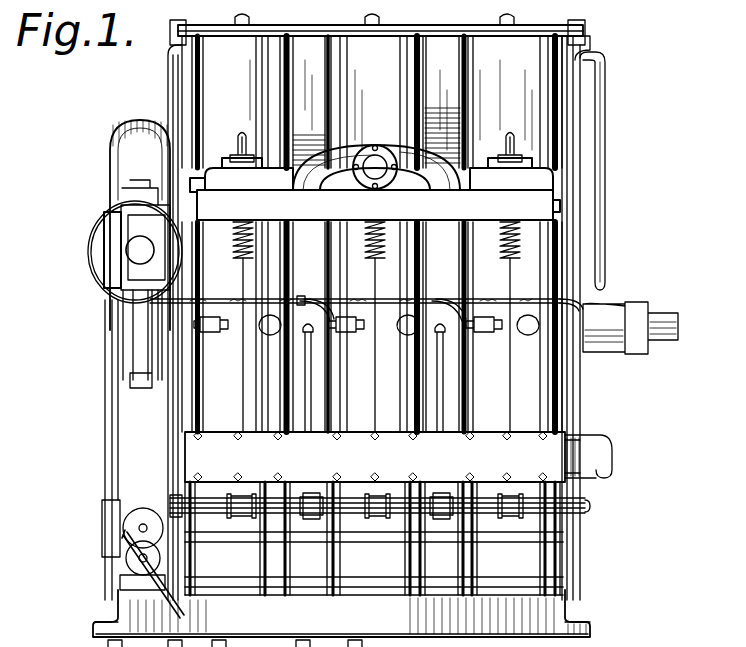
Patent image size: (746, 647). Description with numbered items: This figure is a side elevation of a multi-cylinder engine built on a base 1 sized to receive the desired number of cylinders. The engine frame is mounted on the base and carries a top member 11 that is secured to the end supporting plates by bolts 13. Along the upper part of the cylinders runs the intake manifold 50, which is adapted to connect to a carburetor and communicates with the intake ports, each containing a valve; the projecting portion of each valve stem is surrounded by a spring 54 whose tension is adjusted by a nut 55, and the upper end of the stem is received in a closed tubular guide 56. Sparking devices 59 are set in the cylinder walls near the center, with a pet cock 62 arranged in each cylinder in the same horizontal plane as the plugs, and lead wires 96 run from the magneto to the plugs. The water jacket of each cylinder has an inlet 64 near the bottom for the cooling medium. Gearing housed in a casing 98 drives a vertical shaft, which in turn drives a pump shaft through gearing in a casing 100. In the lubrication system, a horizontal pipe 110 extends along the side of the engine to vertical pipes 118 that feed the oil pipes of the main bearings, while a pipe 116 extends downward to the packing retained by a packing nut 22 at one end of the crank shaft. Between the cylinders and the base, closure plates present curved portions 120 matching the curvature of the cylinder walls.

The base 1 is at (545, 613).
The top member 11 is at (421, 28).
The bolts 13 is at (588, 25).
The packing nut 22 is at (642, 305).
The intake manifold 50 is at (430, 68).
The spring 54 is at (236, 246).
The nut 55 is at (372, 258).
The tubular guide 56 is at (241, 131).
The sparking devices 59 is at (214, 334).
The pet cock 62 is at (300, 292).
The inlet 64 is at (374, 519).
The lead wires 96 is at (236, 298).
The casing 98 is at (100, 250).
The casing 100 is at (110, 512).
The horizontal pipe 110 is at (105, 423).
The pipe 116 is at (609, 171).
The vertical pipes 118 is at (313, 376).
The curved portions 120 is at (374, 538).